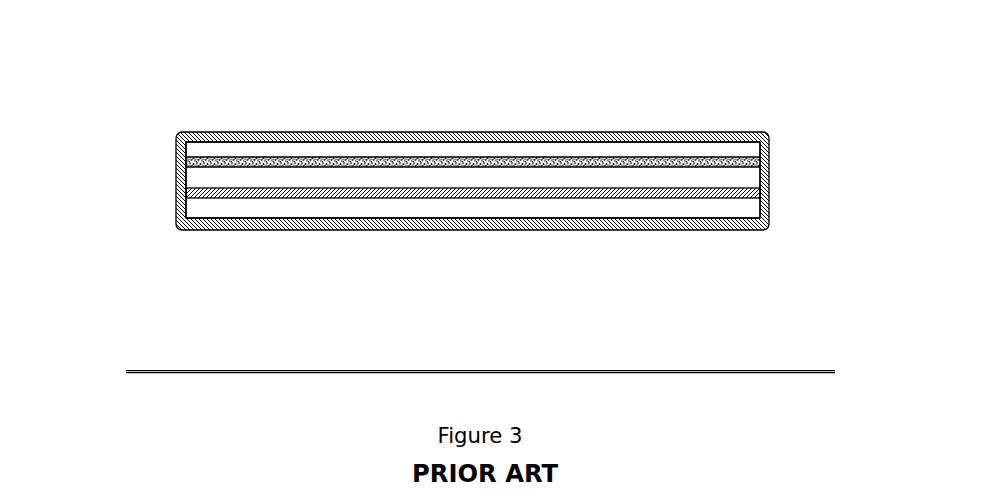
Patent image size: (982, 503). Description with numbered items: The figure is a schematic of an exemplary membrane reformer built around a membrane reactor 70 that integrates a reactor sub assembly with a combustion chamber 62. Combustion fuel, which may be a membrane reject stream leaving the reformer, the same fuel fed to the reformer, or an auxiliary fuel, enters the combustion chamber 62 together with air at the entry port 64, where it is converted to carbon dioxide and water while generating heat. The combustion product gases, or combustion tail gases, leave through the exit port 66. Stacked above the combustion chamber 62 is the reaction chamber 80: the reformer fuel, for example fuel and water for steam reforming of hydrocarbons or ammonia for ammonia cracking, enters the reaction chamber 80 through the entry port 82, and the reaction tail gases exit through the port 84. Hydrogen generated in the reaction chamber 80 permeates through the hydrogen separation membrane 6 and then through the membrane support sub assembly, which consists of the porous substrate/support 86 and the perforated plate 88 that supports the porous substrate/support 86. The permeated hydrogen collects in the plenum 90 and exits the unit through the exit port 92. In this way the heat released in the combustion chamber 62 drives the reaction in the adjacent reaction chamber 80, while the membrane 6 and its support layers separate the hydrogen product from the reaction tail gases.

The membrane reactor 70 is at (310, 99).
The plenum 90 is at (360, 149).
The exit port 92 is at (769, 152).
The entry port 82 is at (769, 180).
The entry port 64 is at (769, 217).
The port 84 is at (176, 180).
The exit port 66 is at (176, 215).
The perforated plate 88 is at (423, 158).
The porous substrate/support 86 is at (468, 159).
The hydrogen separation membrane 6 is at (547, 158).
The reaction chamber 80 is at (605, 182).
The combustion chamber 62 is at (432, 215).